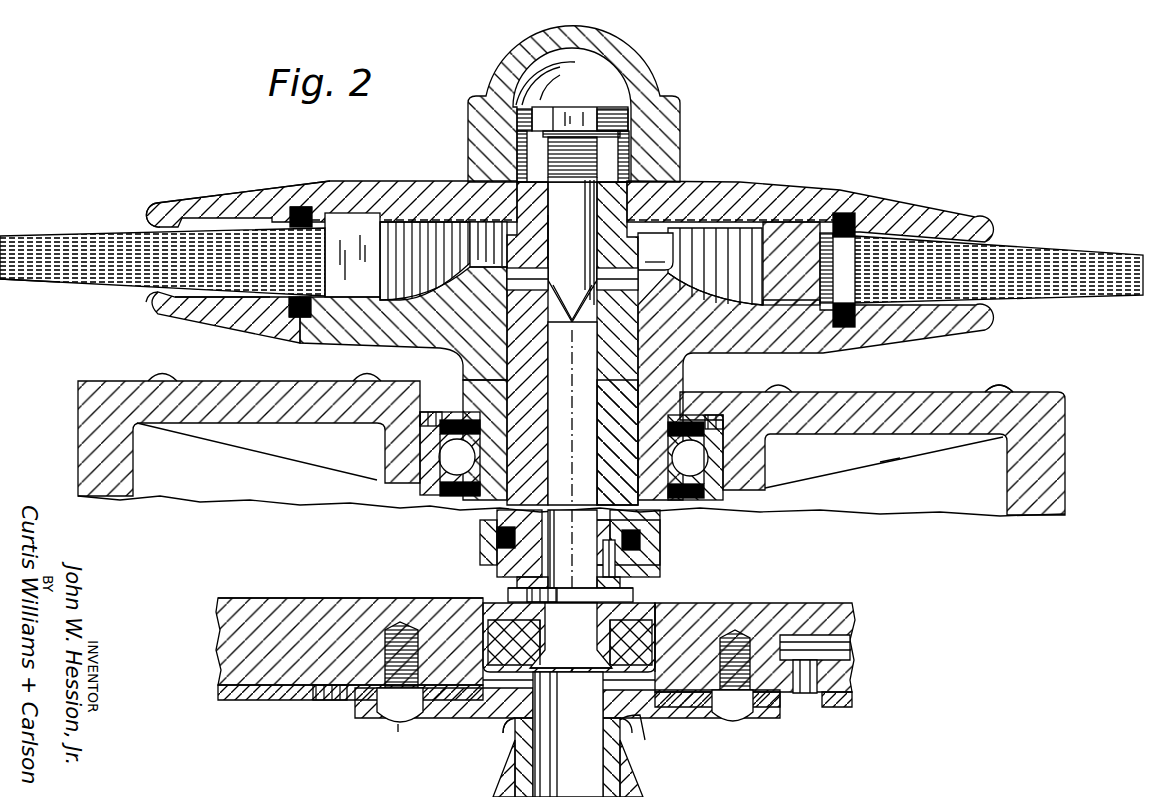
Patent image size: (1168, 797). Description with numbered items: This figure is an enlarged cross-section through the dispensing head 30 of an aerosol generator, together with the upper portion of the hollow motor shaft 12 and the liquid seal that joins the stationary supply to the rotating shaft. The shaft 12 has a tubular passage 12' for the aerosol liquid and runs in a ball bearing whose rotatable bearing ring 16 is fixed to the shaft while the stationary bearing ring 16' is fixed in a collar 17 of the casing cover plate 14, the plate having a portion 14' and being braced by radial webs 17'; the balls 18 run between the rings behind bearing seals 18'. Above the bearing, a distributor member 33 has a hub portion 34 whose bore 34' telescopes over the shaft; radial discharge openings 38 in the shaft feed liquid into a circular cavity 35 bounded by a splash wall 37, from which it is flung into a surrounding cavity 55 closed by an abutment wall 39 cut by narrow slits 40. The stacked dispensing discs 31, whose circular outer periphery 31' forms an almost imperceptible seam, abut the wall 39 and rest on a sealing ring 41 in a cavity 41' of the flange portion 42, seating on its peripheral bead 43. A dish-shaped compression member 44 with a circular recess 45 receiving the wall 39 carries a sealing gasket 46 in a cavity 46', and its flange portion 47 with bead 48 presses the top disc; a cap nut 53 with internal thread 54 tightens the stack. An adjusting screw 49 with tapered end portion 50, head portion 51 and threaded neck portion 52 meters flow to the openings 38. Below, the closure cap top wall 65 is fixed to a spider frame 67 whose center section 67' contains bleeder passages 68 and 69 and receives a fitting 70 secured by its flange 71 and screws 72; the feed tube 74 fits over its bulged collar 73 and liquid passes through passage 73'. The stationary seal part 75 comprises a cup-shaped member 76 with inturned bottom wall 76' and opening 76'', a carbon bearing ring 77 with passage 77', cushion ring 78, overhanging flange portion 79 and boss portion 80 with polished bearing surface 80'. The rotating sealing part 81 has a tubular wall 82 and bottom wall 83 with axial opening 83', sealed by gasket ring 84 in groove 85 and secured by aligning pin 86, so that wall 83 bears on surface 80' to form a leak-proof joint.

The motor shaft 12 is at (646, 383).
The tubular passage 12' is at (572, 343).
The cover plate 14 is at (571, 437).
The housing top 14' is at (967, 375).
The bearing ring 16 is at (572, 425).
The stationary bearing ring 16' is at (607, 482).
The collar 17 is at (570, 461).
The webs 17' is at (891, 471).
The ball bearings 18 is at (601, 483).
The bearing seals 18' is at (586, 448).
The dispensing head 30 is at (770, 184).
The dispensing discs 31 is at (571, 250).
The outer periphery 31' is at (30, 292).
The distributor member 33 is at (173, 329).
The hub portion 34 is at (469, 433).
The bore 34' is at (602, 440).
The circular cavity 35 is at (657, 279).
The splash wall 37 is at (672, 270).
The liquid discharge openings 38 is at (556, 338).
The abutment wall 39 is at (790, 220).
The slits 40 is at (450, 240).
The sealing ring 41 is at (278, 325).
The cavity 41' is at (296, 338).
The flange portion 42 is at (236, 320).
The peripheral bead 43 is at (150, 300).
The compression member 44 is at (392, 181).
The circular recess 45 is at (342, 225).
The sealing gasket 46 is at (285, 194).
The cavity 46' is at (303, 174).
The flange portion 47 is at (234, 196).
The bead 48 is at (154, 222).
The adjusting screw 49 is at (562, 237).
The tapered end portion 50 is at (576, 310).
The head portion 51 is at (586, 109).
The threaded neck portion 52 is at (570, 176).
The cap nut 53 is at (690, 110).
The internal thread 54 is at (630, 118).
The surrounding cavity 55 is at (716, 232).
The top wall 65 is at (855, 701).
The spider frame 67 is at (349, 624).
The center section 67' is at (350, 586).
The air bleeder passage 68 is at (845, 652).
The bleeder passage 69 is at (808, 694).
The fitting 70 is at (650, 735).
The flange 71 is at (368, 715).
The screws 72 is at (748, 728).
The bulged collar 73 is at (543, 757).
The liquid passage 73' is at (568, 734).
The feed tube 74 is at (500, 784).
The stationary part 75 is at (478, 700).
The cup-shaped member 76 is at (755, 636).
The inturned bottom wall 76' is at (582, 670).
The opening 76'' is at (496, 732).
The bearing ring 77 is at (546, 628).
The liquid passage 77' is at (569, 685).
The resilient cushion ring 78 is at (650, 688).
The overhanging flange portion 79 is at (658, 612).
The boss portion 80 is at (535, 584).
The bearing surface 80' is at (534, 569).
The sealing part 81 is at (678, 540).
The tubular wall 82 is at (660, 548).
The bottom wall 83 is at (667, 550).
The axial opening 83' is at (572, 556).
The gasket ring 84 is at (497, 545).
The groove 85 is at (497, 532).
The aligning pin 86 is at (604, 550).